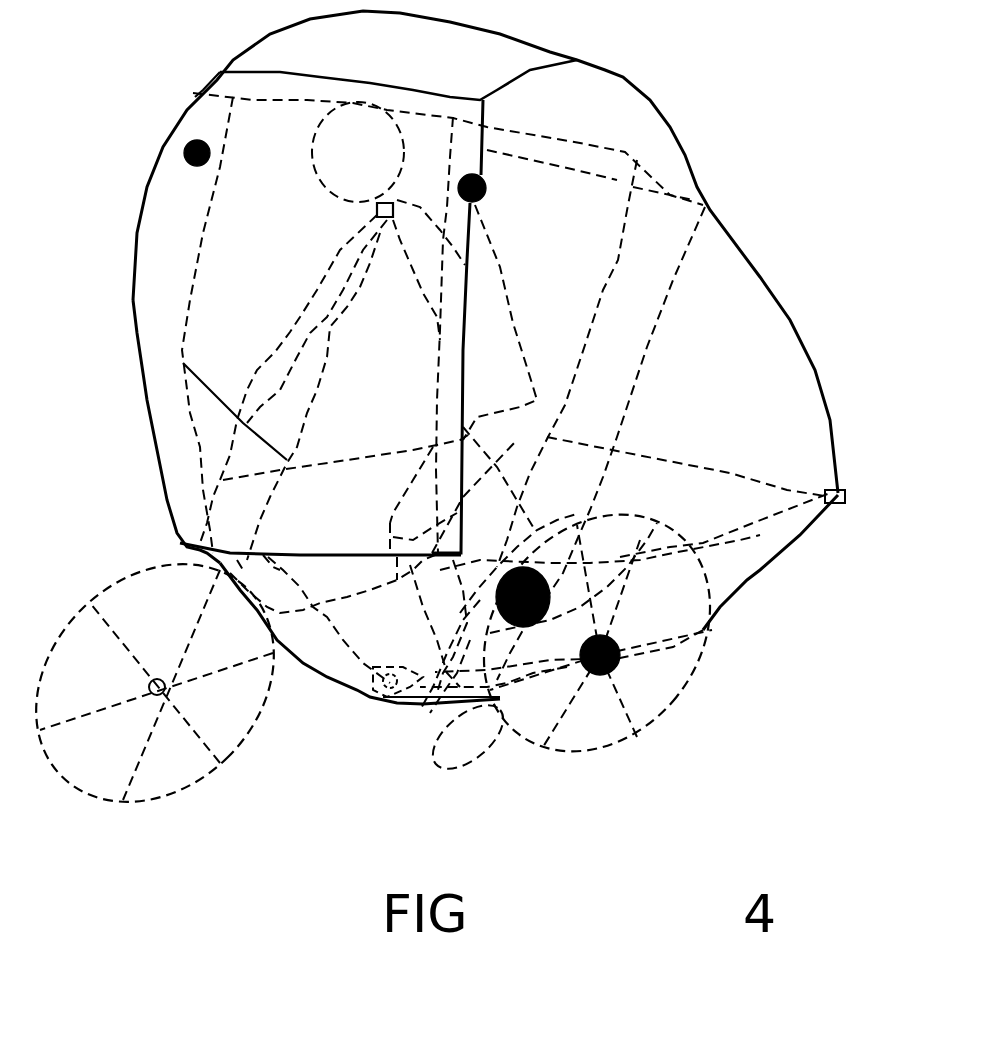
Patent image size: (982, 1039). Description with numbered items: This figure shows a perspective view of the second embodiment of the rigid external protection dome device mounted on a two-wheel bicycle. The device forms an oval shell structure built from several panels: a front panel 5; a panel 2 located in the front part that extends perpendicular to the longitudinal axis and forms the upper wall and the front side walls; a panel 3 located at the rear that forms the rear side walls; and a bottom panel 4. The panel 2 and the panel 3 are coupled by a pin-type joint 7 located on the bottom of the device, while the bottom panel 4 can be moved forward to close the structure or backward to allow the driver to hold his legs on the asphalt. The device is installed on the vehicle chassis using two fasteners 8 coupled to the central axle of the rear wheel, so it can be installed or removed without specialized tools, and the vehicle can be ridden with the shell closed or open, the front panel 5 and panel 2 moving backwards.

The panel 2 is at (565, 225).
The panel 3 is at (713, 367).
The bottom panel 4 is at (745, 572).
The front panel 5 is at (367, 331).
The pin-type joint 7 is at (509, 625).
The fastener 8 is at (613, 668).